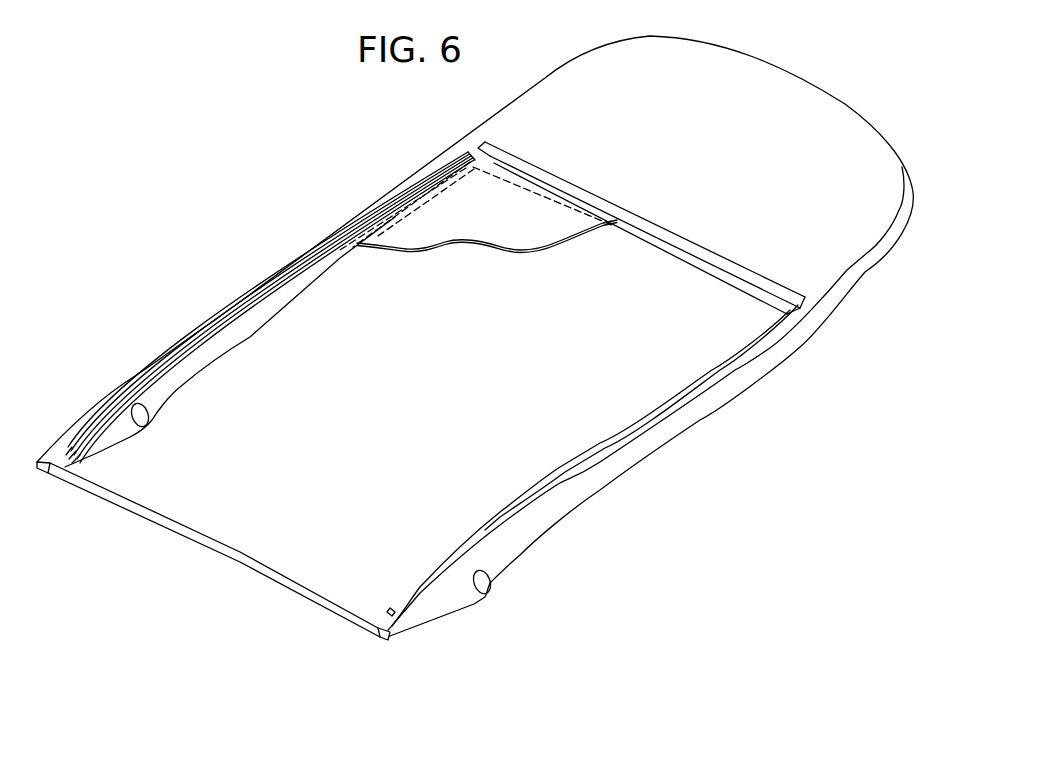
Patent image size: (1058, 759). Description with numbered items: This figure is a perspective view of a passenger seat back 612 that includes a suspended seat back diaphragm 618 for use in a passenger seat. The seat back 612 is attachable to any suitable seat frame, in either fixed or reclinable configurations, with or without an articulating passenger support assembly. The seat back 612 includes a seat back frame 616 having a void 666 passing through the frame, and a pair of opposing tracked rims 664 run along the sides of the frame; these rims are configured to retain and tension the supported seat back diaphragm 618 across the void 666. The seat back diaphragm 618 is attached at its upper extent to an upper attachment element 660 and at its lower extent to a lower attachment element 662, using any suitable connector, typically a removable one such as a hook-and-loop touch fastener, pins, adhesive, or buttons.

The passenger seat back 612 is at (367, 153).
The seat back frame 616 is at (238, 292).
The seat back diaphragm 618 is at (502, 220).
The upper attachment element 660 is at (652, 242).
The lower attachment element 662 is at (185, 523).
The tracked rims 664 is at (223, 333).
The void 666 is at (393, 290).